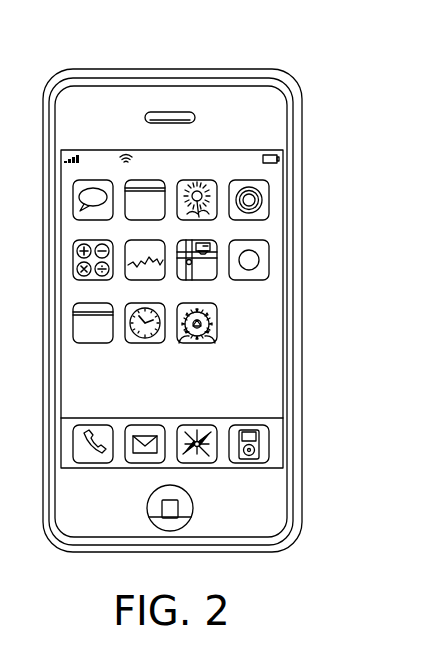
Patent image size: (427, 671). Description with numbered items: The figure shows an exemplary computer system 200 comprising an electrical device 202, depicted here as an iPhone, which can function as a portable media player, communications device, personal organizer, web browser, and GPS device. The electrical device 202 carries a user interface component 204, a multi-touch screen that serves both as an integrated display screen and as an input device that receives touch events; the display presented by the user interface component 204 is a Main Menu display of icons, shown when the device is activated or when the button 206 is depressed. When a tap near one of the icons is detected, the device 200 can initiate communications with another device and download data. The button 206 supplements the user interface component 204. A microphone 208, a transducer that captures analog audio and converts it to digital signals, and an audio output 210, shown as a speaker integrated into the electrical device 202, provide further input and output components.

The computer system 200 is at (193, 50).
The electrical device 202 is at (288, 83).
The user interface component 204 is at (272, 348).
The button 206 is at (178, 505).
The microphone 208 is at (170, 531).
The audio output 210 is at (180, 115).